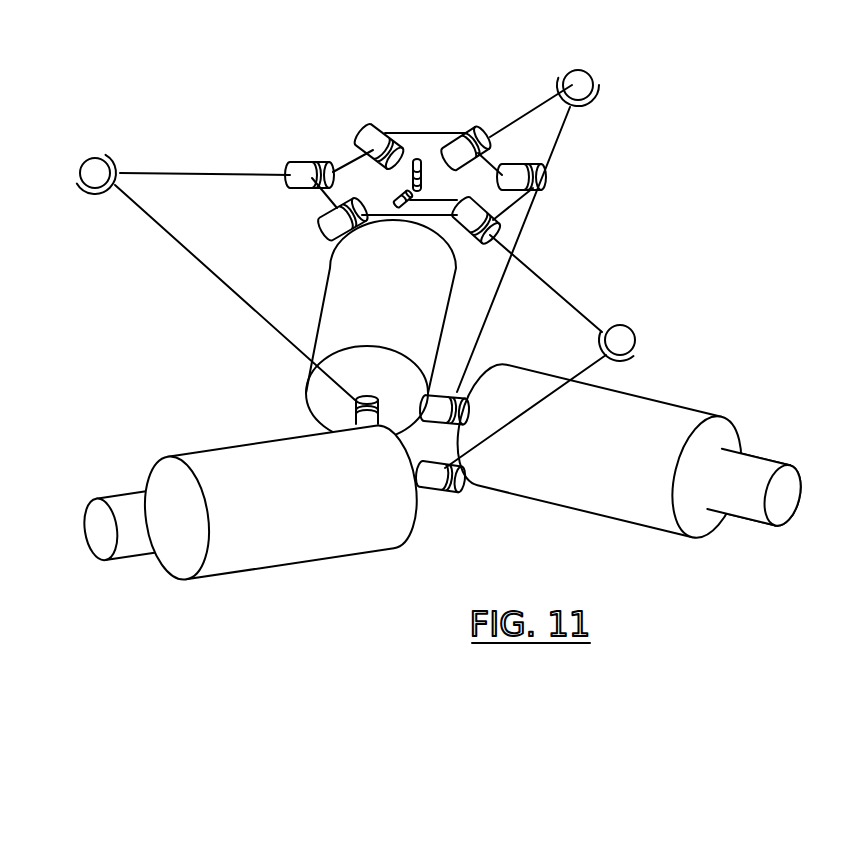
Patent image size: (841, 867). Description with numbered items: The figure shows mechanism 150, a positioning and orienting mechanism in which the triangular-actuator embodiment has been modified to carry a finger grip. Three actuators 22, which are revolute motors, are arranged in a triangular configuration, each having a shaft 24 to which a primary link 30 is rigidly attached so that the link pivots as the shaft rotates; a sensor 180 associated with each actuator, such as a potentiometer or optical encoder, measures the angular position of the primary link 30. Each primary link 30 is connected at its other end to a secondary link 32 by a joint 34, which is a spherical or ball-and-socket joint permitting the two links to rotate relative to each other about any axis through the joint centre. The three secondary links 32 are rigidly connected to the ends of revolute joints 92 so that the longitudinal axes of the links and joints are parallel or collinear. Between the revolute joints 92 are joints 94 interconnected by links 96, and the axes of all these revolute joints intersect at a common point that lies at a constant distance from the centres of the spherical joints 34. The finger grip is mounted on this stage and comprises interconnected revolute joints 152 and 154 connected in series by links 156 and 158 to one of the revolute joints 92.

The actuator 22 is at (320, 430).
The shaft 24 is at (355, 412).
The primary link 30 is at (200, 263).
The secondary link 32 is at (186, 172).
The joint 34 is at (95, 158).
The revolute joint 92 is at (288, 178).
The joint 94 is at (552, 182).
The link 96 is at (392, 132).
The mechanism 150 is at (713, 110).
The revolute joint 152 is at (406, 196).
The revolute joint 154 is at (425, 168).
The link 156 is at (432, 213).
The link 158 is at (417, 162).
The sensor 180 is at (142, 547).